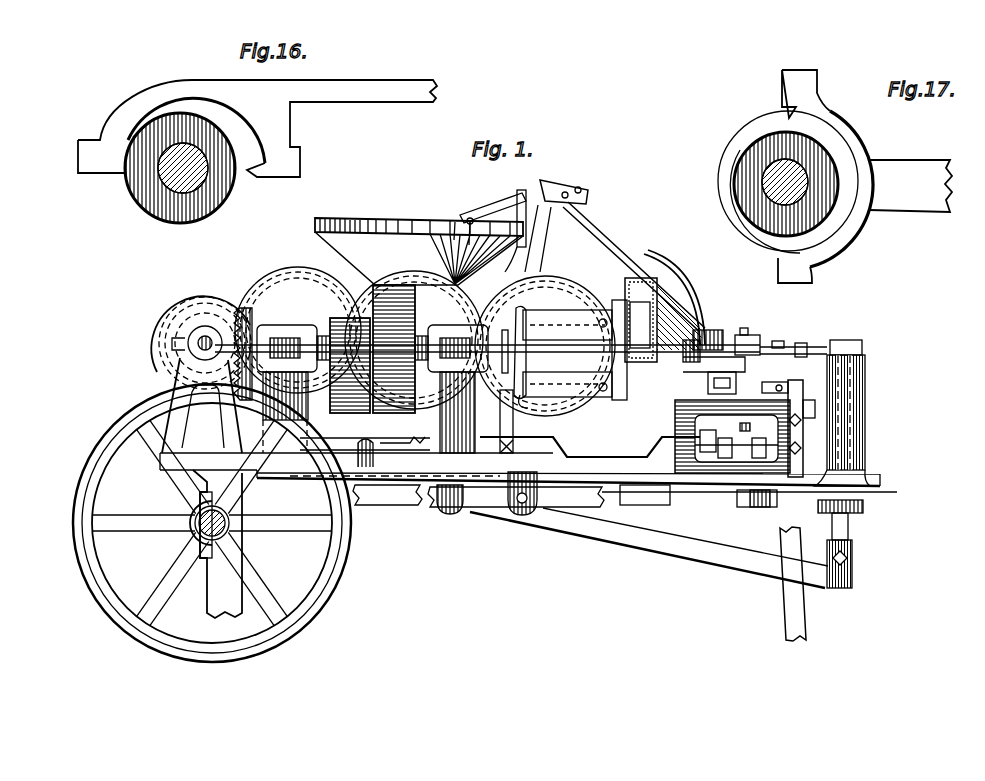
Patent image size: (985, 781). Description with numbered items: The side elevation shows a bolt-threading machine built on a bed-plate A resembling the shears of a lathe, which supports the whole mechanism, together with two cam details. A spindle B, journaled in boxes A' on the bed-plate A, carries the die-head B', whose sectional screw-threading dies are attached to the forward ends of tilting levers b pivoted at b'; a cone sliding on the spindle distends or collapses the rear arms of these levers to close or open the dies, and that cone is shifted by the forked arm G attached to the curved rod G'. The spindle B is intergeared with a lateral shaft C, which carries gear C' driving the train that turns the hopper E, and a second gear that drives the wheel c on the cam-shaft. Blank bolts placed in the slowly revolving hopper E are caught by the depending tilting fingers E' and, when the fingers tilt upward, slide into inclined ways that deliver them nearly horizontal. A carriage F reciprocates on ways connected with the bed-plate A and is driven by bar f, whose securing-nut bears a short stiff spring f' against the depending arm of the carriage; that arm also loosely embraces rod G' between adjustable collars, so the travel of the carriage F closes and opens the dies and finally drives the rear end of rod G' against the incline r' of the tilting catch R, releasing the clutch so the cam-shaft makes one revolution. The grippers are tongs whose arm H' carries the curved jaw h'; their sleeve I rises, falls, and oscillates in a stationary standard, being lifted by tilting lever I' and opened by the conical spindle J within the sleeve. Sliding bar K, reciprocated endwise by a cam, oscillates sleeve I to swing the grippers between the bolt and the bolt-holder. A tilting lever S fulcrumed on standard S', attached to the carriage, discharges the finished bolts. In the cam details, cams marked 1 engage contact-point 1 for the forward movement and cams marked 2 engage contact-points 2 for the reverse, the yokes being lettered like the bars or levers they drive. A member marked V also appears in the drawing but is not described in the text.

In FIG. 16, the sliding bar K is at (257, 128).
In FIG. 16, the cam and contact-point for forward movement 1 is at (125, 142).
In FIG. 17, the cam and contact-point for forward movement 1 is at (842, 214).
In FIG. 16, the cam and contact-point for reverse movement 2 is at (150, 121).
In FIG. 17, the cam and contact-point for reverse movement 2 is at (835, 176).
In FIG. 1, the lateral shaft C is at (212, 523).
In FIG. 1, the bed-plate A is at (525, 488).
In FIG. 1, the gear C' is at (243, 354).
In FIG. 1, the tilting levers b is at (487, 350).
In FIG. 1, the lever pivot b' is at (595, 356).
In FIG. 1, the die-head B' is at (628, 320).
In FIG. 1, the boxes A' is at (372, 389).
In FIG. 1, the spindle B is at (368, 365).
In FIG. 1, the hopper E is at (419, 251).
In FIG. 1, the tilting fingers E' is at (493, 226).
In FIG. 1, the valve box V is at (640, 279).
In FIG. 1, the gear (wheel) c is at (676, 320).
In FIG. 1, the gripper jaw h' is at (688, 350).
In FIG. 1, the gripper arm H' is at (793, 344).
In FIG. 1, the rod G' is at (600, 439).
In FIG. 1, the spring f' is at (761, 518).
In FIG. 1, the bar f is at (669, 500).
In FIG. 1, the arm G is at (506, 421).
In FIG. 1, the tilting lever S is at (802, 428).
In FIG. 1, the standard S' is at (775, 381).
In FIG. 1, the carriage F is at (804, 412).
In FIG. 1, the tilting catch (latch) R is at (365, 443).
In FIG. 1, the incline r' is at (402, 431).
In FIG. 1, the vertical sleeve I is at (752, 495).
In FIG. 1, the tilting lever I' is at (478, 496).
In FIG. 1, the spindle J is at (841, 550).